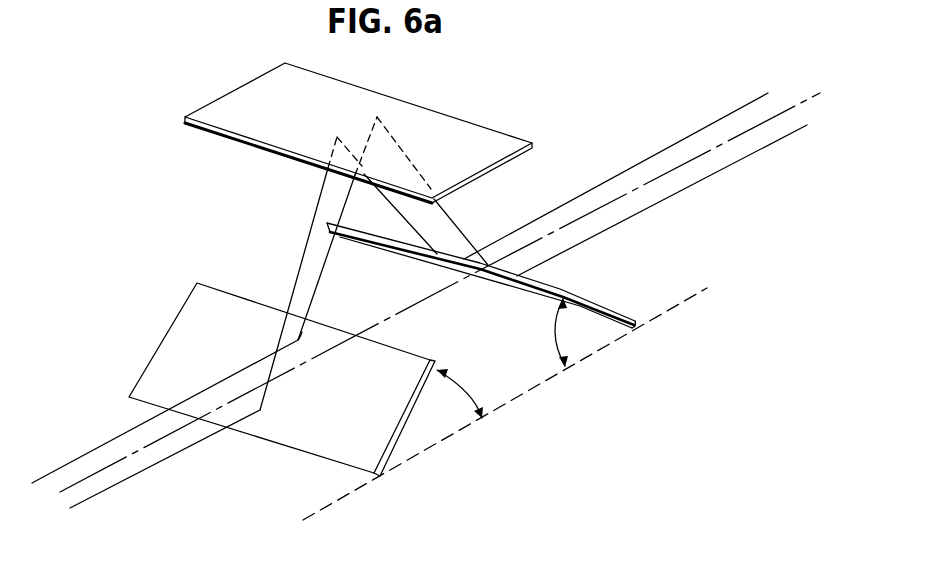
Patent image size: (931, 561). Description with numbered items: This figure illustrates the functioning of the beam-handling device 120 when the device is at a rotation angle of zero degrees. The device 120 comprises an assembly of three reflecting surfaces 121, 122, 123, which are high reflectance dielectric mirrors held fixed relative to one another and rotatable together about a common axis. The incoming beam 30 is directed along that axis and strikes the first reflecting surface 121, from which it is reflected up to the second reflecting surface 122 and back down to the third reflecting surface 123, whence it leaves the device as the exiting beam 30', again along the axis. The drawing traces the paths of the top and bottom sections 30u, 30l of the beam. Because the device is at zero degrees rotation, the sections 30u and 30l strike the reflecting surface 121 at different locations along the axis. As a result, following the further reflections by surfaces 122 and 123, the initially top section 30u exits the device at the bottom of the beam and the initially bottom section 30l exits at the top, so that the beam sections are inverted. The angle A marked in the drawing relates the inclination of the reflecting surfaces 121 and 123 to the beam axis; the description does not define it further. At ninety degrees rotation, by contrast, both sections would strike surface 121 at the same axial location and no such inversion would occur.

The device 120 is at (518, 122).
The reflecting surface 121 is at (190, 302).
The reflecting surface 122 is at (203, 100).
The reflecting surface 123 is at (603, 302).
The incoming beam 30 is at (234, 404).
The exiting beam 30' is at (643, 177).
The bottom section of the beam 30l is at (650, 153).
The top section of the beam 30u is at (760, 148).
The angle A is at (505, 404).